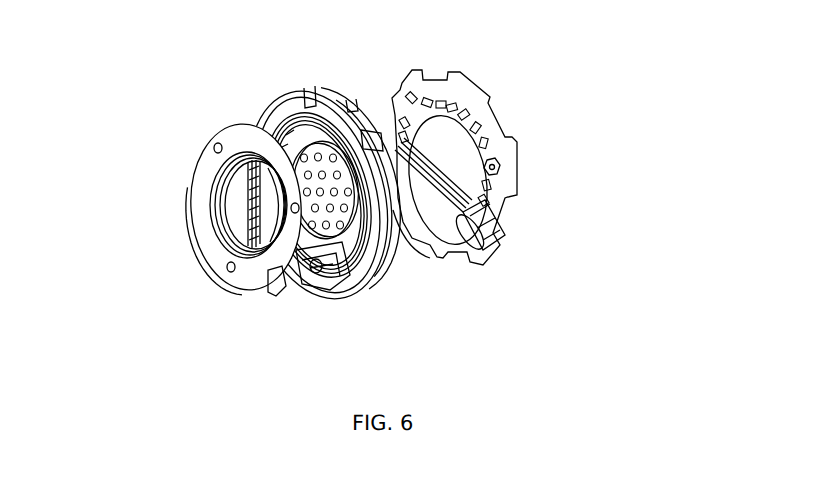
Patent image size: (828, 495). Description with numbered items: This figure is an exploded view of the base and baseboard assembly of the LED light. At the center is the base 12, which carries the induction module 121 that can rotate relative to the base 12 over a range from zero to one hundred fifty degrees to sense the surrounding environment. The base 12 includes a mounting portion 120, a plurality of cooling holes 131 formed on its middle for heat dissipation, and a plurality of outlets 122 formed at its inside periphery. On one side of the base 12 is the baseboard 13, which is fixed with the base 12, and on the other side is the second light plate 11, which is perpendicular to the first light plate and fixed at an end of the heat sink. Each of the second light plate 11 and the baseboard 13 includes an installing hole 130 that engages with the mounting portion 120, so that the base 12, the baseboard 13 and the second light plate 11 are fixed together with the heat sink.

The second light plate 11 is at (465, 93).
The base 12 is at (385, 245).
The baseboard 13 is at (272, 293).
The mounting portion 120 is at (341, 238).
The induction module 121 is at (503, 207).
The outlets 122 is at (288, 140).
The installing hole 130 is at (217, 148).
The cooling holes 131 is at (322, 157).